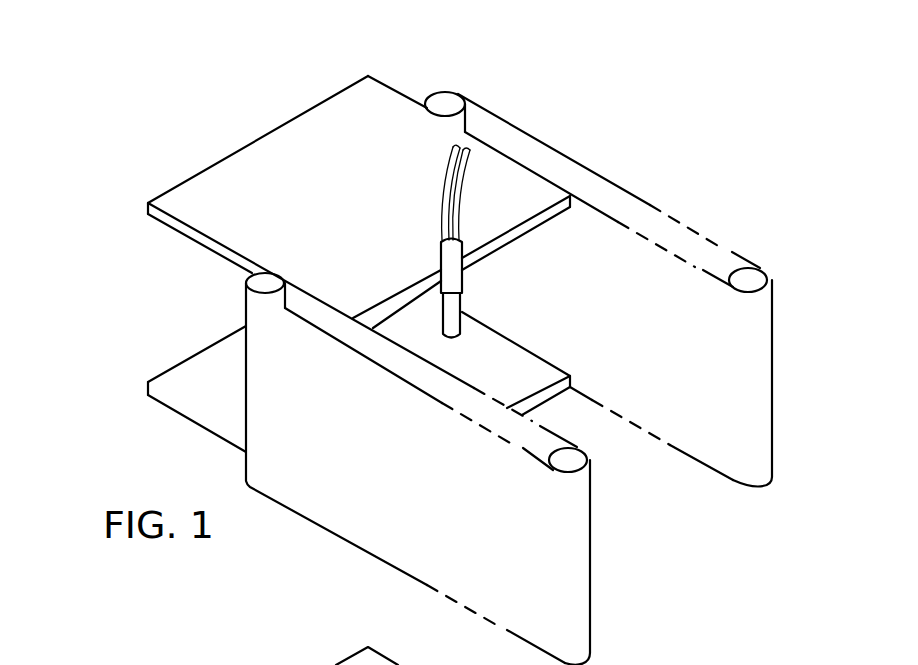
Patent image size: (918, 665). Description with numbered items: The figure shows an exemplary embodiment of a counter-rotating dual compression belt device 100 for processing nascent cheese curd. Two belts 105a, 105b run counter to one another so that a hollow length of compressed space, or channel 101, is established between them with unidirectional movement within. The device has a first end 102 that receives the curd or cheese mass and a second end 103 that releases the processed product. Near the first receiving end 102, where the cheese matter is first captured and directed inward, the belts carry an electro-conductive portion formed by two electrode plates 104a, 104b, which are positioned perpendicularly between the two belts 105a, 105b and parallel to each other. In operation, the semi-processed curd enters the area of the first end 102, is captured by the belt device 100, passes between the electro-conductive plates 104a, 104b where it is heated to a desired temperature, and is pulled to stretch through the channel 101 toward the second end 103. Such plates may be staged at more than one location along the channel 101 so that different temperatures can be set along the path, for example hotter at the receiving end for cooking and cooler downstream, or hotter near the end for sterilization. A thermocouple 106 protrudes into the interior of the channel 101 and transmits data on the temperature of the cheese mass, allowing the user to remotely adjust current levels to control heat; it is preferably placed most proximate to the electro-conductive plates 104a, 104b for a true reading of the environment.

The counter-rotating dual compression belt device 100 is at (543, 140).
The channel 101 is at (182, 290).
The first end 102 is at (402, 78).
The second end 103 is at (747, 420).
The electrode plate 104a is at (240, 197).
The electrode plate 104b is at (167, 370).
The belt 105a is at (623, 187).
The belt 105b is at (383, 543).
The thermocouple 106 is at (437, 258).